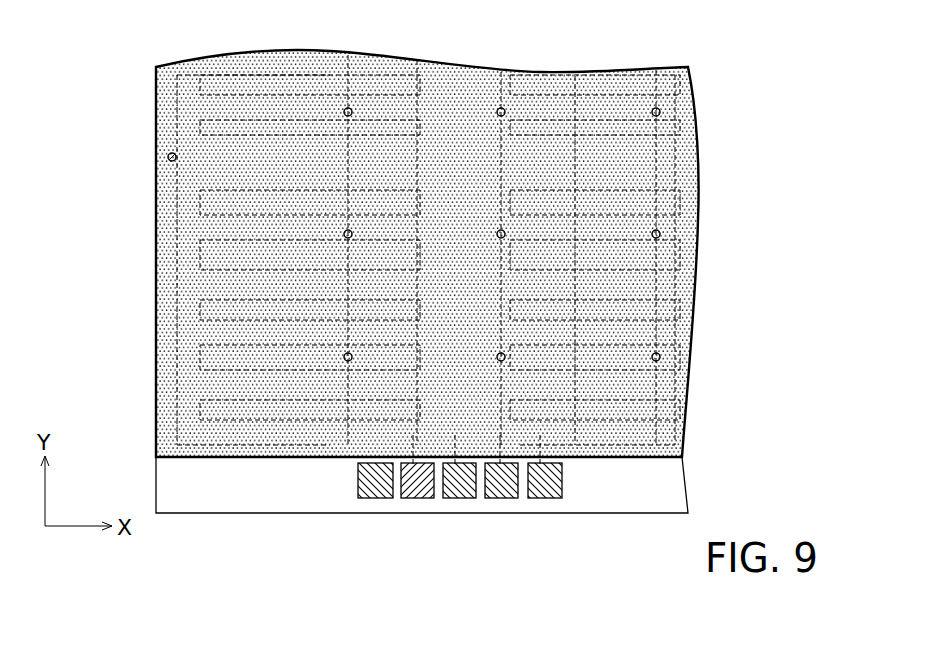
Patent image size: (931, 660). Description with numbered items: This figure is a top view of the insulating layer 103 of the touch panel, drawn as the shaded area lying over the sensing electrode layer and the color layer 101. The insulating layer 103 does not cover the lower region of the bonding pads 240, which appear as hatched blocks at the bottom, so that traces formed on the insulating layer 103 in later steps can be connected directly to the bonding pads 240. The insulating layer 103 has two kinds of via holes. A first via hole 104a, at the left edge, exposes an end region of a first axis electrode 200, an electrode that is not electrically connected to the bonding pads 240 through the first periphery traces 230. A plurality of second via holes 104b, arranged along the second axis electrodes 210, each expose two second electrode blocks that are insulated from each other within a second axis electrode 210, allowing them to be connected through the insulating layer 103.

The color layer 101 is at (681, 478).
The insulating layer 103 is at (684, 437).
The first via hole 104a is at (167, 157).
The second via hole 104b is at (661, 112).
The first axis electrode 200 is at (697, 162).
The second axis electrode 210 is at (349, 58).
The first periphery trace 230 is at (300, 452).
The bonding pad 240 is at (568, 512).